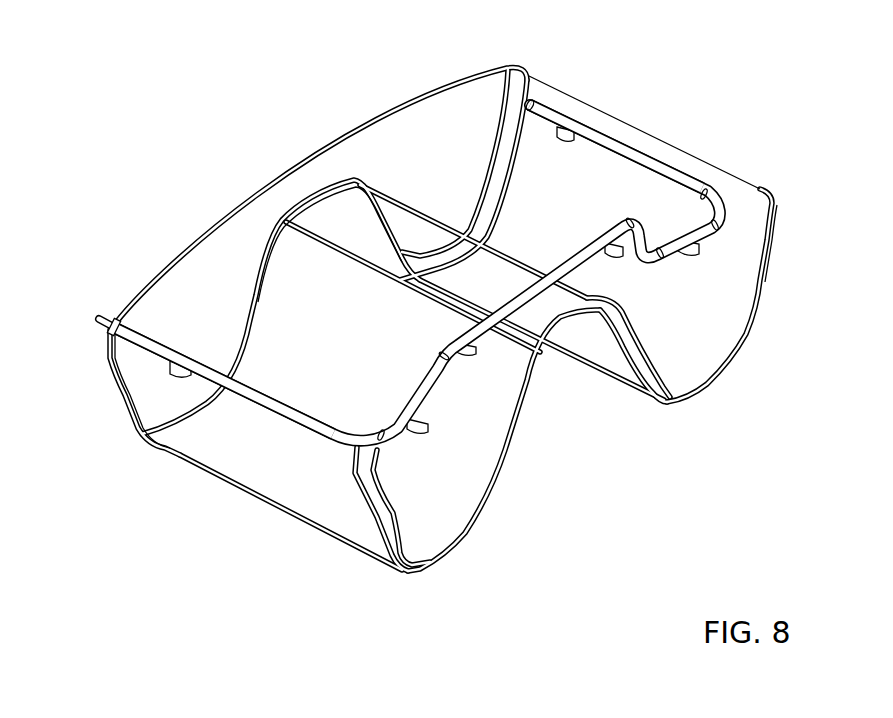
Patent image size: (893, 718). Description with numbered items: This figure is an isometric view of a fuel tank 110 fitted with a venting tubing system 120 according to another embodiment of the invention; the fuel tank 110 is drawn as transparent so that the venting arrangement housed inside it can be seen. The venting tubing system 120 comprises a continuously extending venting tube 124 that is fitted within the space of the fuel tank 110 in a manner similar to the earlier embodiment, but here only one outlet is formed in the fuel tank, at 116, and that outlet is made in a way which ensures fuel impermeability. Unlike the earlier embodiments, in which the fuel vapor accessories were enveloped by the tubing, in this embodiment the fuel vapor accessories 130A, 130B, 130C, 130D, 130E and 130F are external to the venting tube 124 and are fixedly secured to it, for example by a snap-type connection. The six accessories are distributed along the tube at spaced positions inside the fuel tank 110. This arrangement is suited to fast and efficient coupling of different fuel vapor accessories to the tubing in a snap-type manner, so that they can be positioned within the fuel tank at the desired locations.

The fuel tank 110 is at (736, 390).
The outlet 116 is at (102, 320).
The venting tubing system 120 is at (623, 130).
The venting tube 124 is at (638, 160).
The fuel vapor accessory 130A is at (172, 377).
The fuel vapor accessory 130B is at (425, 432).
The fuel vapor accessory 130C is at (472, 356).
The fuel vapor accessory 130D is at (616, 257).
The fuel vapor accessory 130E is at (697, 255).
The fuel vapor accessory 130F is at (559, 128).